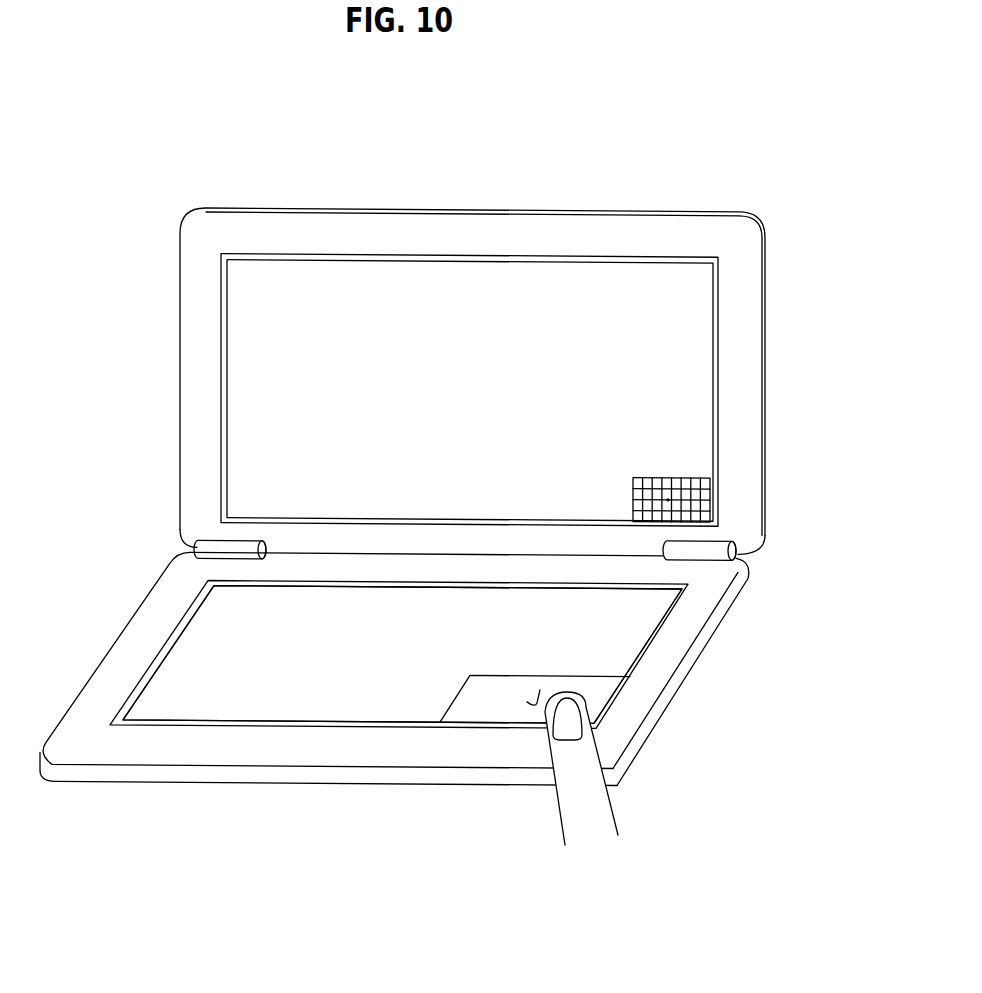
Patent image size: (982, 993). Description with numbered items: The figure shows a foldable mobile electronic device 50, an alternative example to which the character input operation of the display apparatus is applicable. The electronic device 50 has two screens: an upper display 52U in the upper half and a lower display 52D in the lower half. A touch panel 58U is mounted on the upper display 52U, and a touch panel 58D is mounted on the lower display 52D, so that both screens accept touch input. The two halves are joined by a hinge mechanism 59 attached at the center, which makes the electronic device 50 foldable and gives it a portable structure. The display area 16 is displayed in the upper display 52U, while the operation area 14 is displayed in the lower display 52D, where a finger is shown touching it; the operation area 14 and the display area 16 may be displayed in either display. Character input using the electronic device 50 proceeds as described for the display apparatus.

The electronic device 50 is at (442, 183).
The touch panel 58U is at (228, 334).
The upper display 52U is at (642, 308).
The display area 16 is at (689, 480).
The hinge mechanism 59 is at (212, 541).
The touch panel 58D is at (167, 647).
The lower display 52D is at (598, 633).
The operation area 14 is at (575, 687).